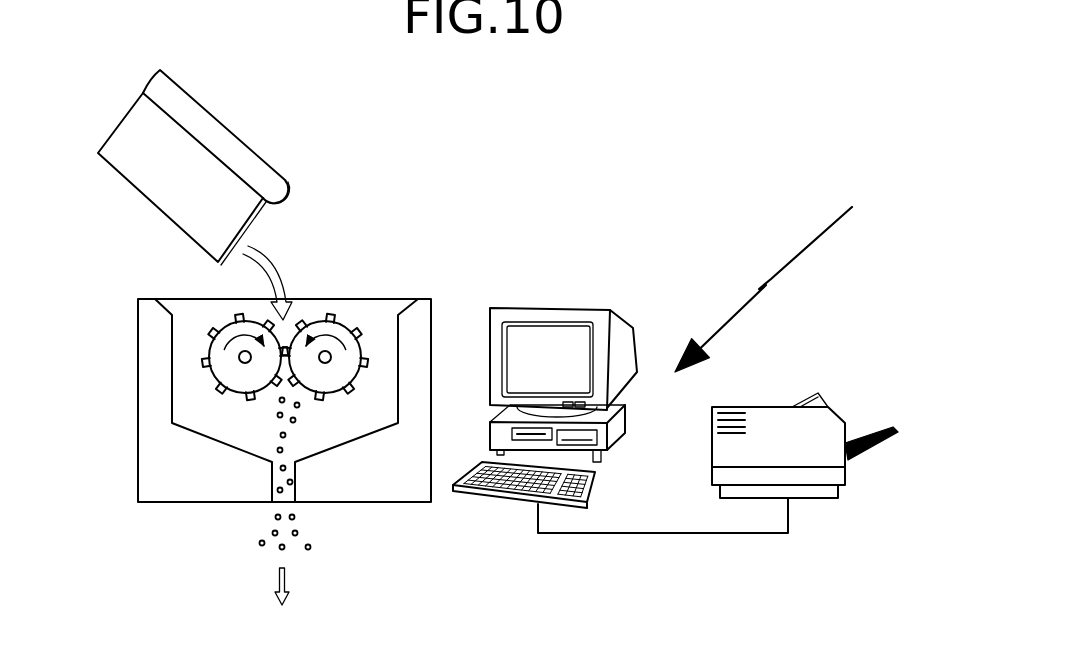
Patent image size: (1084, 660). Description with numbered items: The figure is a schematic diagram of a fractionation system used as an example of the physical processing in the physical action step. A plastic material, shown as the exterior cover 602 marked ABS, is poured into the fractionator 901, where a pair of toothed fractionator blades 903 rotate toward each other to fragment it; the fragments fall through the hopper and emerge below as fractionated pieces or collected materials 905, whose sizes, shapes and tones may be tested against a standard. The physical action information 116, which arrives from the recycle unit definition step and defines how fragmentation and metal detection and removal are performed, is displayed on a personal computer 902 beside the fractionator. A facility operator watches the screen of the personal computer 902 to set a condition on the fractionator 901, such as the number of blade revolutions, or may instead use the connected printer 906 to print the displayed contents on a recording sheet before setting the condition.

The exterior cover 602 is at (215, 108).
The fractionator 901 is at (430, 298).
The crushing rollers 903 is at (335, 318).
The collected materials 905 is at (320, 513).
The personal computer 902 is at (633, 346).
The physical action information 116 is at (795, 259).
The printer 906 is at (750, 401).